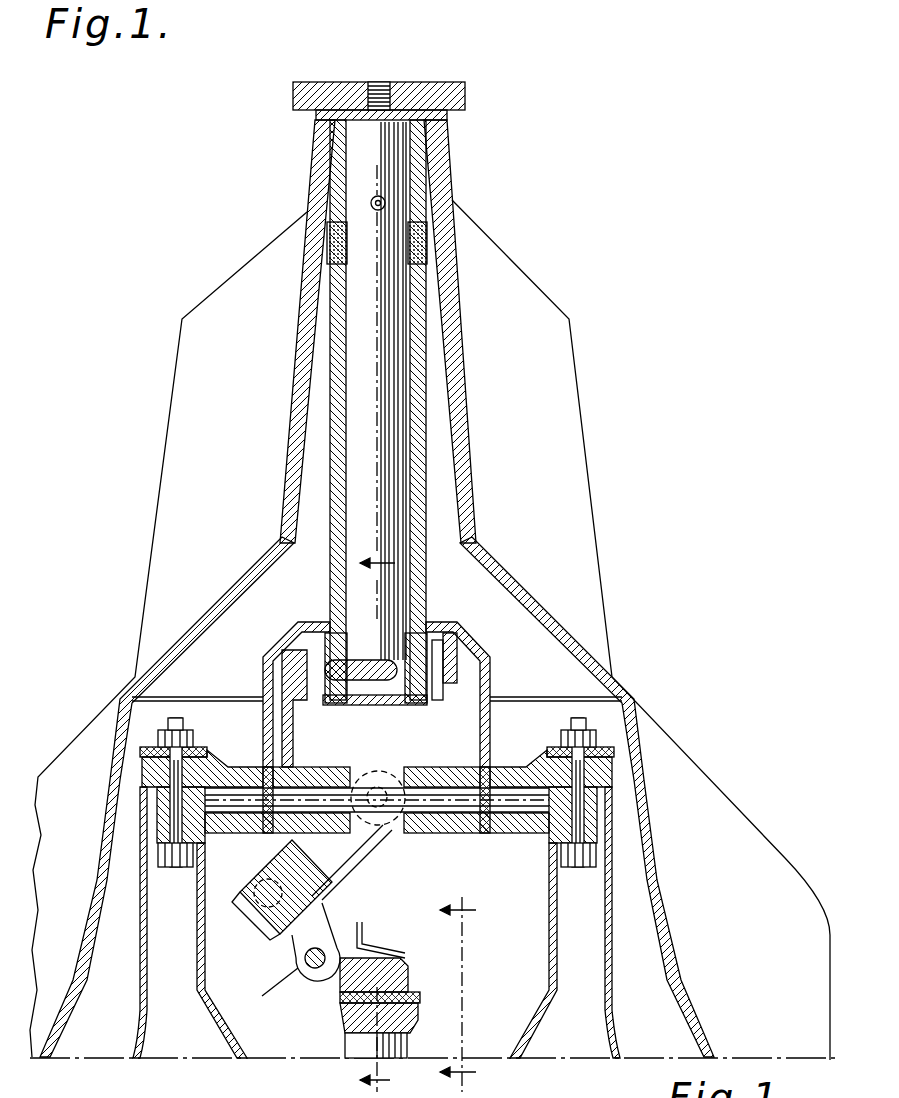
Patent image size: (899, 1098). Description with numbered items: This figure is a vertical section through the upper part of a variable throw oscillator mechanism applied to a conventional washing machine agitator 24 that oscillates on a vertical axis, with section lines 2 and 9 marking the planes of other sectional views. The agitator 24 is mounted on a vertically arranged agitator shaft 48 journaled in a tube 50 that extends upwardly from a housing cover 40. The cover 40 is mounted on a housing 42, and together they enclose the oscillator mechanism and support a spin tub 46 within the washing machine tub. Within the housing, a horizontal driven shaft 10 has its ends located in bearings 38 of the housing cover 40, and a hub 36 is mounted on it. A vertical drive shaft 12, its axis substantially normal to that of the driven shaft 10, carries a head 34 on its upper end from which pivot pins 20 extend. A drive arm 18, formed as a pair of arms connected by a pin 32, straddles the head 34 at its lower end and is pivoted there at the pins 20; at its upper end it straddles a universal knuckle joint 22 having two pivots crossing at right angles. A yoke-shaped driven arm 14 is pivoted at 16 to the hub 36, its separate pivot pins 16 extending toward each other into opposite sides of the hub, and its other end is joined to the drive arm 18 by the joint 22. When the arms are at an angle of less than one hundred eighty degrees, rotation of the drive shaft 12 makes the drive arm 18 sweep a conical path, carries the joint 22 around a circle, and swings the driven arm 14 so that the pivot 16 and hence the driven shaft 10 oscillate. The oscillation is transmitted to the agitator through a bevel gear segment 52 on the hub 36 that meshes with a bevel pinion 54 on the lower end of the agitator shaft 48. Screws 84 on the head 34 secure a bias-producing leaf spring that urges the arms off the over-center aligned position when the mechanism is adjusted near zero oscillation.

The section line 2- 2 is at (377, 809).
The section line 9- 9 is at (468, 994).
The driven shaft 10 is at (508, 807).
The drive shaft 12 is at (360, 1053).
The driven arm 14 is at (347, 855).
The pivot 16 is at (372, 790).
The drive arm 18 is at (300, 965).
The pivot pins 20 is at (405, 976).
The universal knuckle joint 22 is at (326, 905).
The washing machine agitator 24 is at (470, 411).
The pin 32 is at (320, 950).
The head 34 is at (396, 958).
The hub 36 is at (430, 773).
The bearings 38 is at (228, 768).
The housing cover 40 is at (490, 680).
The housing 42 is at (538, 1025).
The spin tub 46 is at (605, 932).
The agitator shaft 48 is at (395, 377).
The tube 50 is at (422, 482).
The bevel gear segment 52 is at (307, 710).
The bevel pinion 54 is at (440, 653).
The screws 84 is at (405, 1022).